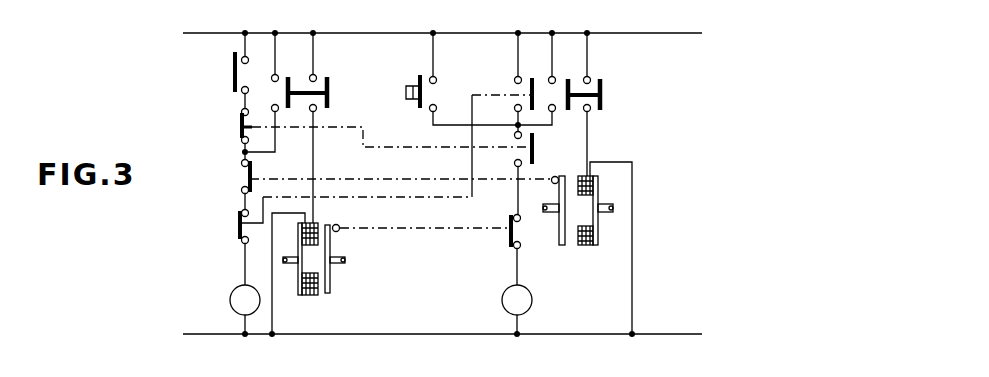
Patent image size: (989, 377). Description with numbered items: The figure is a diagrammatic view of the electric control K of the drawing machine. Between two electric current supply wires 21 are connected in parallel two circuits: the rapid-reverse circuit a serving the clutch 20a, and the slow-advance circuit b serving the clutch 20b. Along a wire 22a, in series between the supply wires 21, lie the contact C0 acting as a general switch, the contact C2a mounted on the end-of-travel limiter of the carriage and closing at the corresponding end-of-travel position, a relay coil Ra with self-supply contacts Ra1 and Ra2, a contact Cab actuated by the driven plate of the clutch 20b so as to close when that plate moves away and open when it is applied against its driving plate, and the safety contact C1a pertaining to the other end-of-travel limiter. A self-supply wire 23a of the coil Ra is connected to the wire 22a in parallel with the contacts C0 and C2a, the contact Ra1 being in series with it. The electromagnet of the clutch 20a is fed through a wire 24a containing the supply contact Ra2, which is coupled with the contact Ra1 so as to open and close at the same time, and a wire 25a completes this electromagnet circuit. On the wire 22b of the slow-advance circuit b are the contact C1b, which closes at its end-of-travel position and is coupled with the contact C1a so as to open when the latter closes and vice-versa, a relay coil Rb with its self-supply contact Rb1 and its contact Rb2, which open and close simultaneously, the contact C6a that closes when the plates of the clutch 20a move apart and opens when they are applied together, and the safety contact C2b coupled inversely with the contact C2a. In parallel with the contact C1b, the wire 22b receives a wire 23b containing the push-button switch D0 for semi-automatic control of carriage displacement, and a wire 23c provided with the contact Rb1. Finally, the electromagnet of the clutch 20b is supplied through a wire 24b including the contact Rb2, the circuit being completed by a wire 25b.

The electric current supply wires 21 is at (210, 33).
The control K is at (224, 236).
The contact C° C0 is at (234, 72).
The contact C2a is at (241, 127).
The contact Cab is at (241, 180).
The safety contact C1a is at (239, 225).
The contact C1b is at (528, 88).
The safety contact C2b is at (533, 149).
The contact Cba C6a is at (511, 228).
The push-button switch D° D0 is at (415, 85).
The relay coil Ra is at (230, 303).
The relay coil Rb is at (505, 306).
The self-supply contact Ra1 is at (277, 75).
The supply contact Ra2 is at (315, 75).
The self-supply contact Rb1 is at (554, 76).
The contact Rb2 is at (589, 76).
The circuit a is at (316, 139).
The circuit b is at (602, 119).
The wire 22a is at (245, 270).
The wire 22b is at (517, 268).
The self-supply wire 23a is at (277, 137).
The wire 23b is at (436, 127).
The wire 23c is at (549, 117).
The wire 24a is at (314, 148).
The wire 24b is at (590, 134).
The wire 25a is at (272, 300).
The wire 25b is at (632, 246).
The clutch 20a is at (318, 291).
The clutch 20b is at (563, 247).